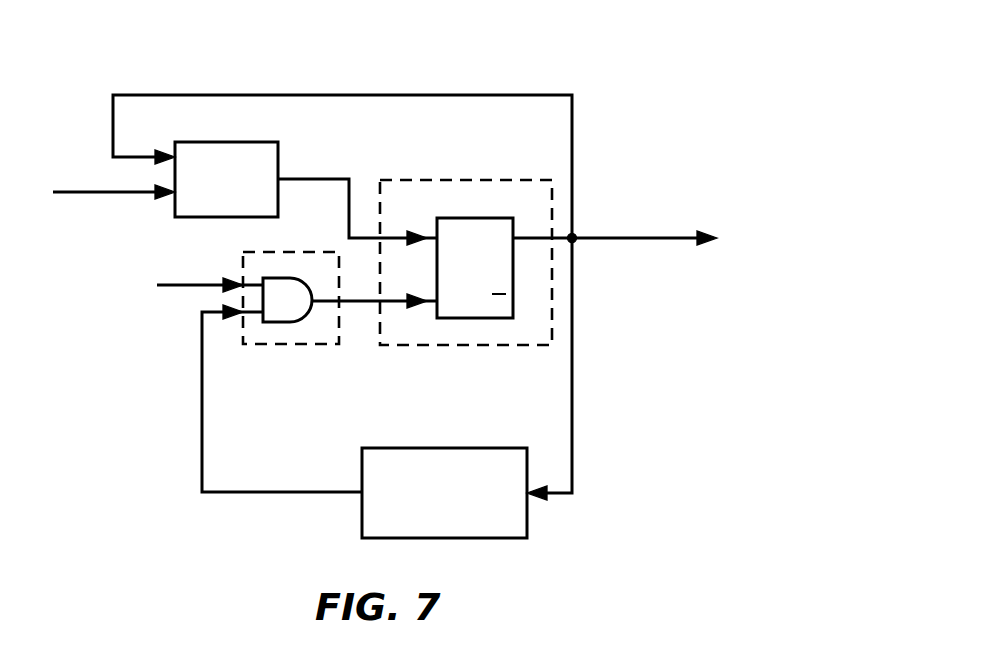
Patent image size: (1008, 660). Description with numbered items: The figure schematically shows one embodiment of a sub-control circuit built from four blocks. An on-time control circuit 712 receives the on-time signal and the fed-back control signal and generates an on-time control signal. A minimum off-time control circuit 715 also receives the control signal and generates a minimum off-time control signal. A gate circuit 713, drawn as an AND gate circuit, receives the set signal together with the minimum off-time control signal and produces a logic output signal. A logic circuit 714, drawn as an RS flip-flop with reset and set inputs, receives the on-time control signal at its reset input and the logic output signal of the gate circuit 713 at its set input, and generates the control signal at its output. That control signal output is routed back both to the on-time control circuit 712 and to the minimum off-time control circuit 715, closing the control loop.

The on-time control circuit 712 is at (202, 218).
The gate circuit 713 is at (275, 344).
The logic circuit 714 is at (417, 344).
The minimum off-time control circuit 715 is at (430, 538).